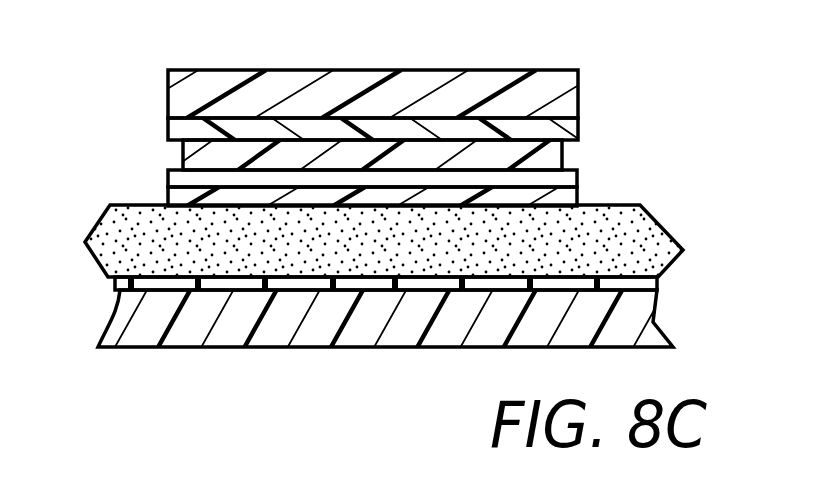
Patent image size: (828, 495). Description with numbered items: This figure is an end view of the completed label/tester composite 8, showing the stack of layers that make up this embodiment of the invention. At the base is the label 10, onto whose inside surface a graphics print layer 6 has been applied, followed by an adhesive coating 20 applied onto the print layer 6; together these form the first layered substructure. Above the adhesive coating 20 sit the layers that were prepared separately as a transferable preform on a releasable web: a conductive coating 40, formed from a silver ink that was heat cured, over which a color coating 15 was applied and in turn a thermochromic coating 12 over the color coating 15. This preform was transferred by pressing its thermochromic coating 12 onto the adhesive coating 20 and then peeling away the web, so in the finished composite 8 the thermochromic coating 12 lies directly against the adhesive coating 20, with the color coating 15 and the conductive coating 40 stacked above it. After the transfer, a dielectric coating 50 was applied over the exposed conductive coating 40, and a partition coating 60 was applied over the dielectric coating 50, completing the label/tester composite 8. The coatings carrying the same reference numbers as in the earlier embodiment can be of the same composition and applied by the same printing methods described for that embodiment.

The label/tester composite 8 is at (260, 353).
The partition coating 60 is at (168, 98).
The dielectric coating 50 is at (168, 125).
The conductive coating 40 is at (183, 152).
The color coating 15 is at (168, 180).
The thermochromic coating 12 is at (167, 199).
The adhesive coating 20 is at (92, 228).
The graphics print layer 6 is at (117, 287).
The label 10 is at (108, 325).